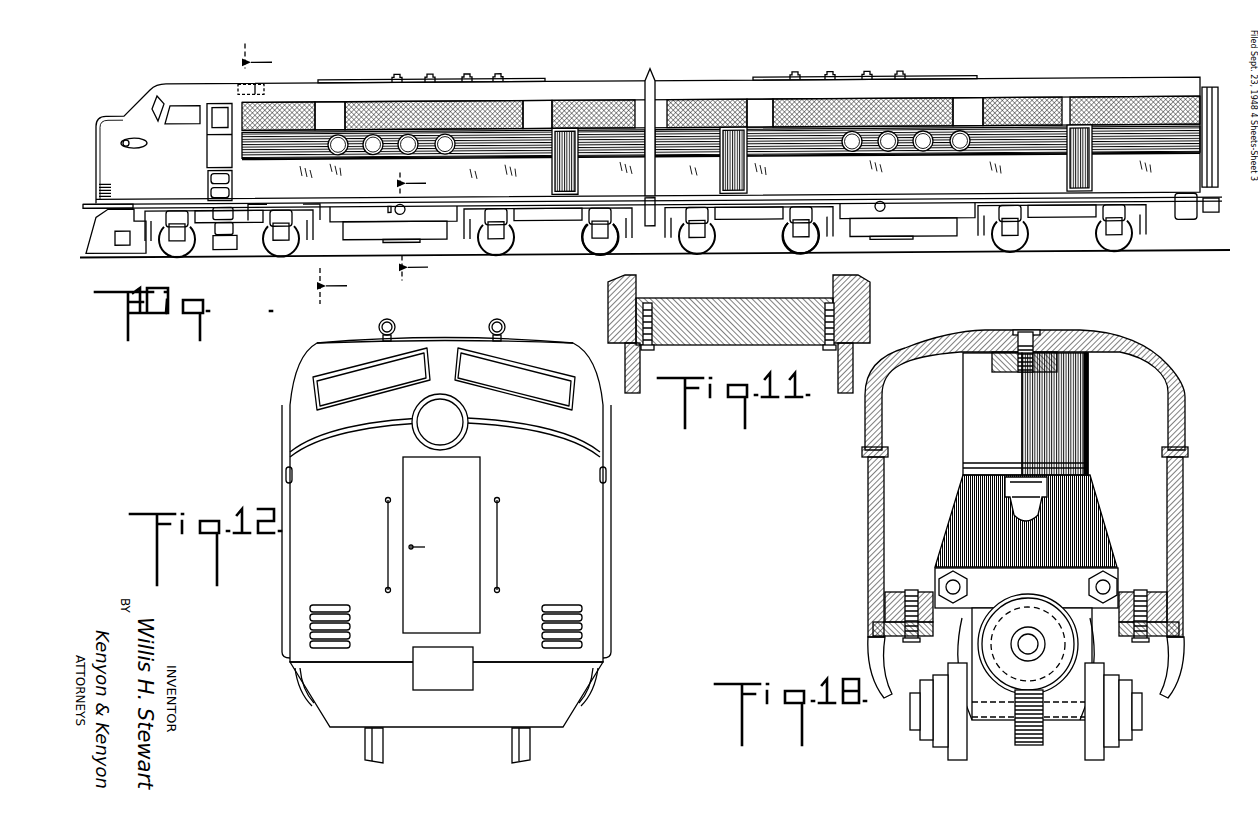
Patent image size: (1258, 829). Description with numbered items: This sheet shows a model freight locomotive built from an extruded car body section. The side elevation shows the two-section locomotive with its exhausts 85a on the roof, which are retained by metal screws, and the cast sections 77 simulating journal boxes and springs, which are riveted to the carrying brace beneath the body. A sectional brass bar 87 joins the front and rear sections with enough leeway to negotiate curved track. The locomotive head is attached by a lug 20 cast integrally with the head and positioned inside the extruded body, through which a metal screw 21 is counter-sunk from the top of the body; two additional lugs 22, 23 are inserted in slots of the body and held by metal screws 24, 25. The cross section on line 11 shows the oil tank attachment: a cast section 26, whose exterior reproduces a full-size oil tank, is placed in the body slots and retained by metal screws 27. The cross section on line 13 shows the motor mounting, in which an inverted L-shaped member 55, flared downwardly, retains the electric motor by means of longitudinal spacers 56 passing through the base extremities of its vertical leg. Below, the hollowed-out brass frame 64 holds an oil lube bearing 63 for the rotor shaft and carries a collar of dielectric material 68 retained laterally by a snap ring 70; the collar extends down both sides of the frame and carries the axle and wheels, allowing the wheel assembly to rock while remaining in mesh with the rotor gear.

In FIG. 10, the section line 11— 11 is at (426, 226).
In FIG. 10, the section line 13— 13 is at (301, 176).
In FIG. 10, the lug 20 is at (262, 92).
In FIG. 13, the lug 20 is at (1052, 352).
In FIG. 10, the metal screw 21 is at (244, 88).
In FIG. 13, the metal screw 21 is at (1020, 346).
In FIG. 10, the lug 22 is at (241, 196).
In FIG. 13, the lug 22 is at (893, 600).
In FIG. 13, the lug 23 is at (1172, 600).
In FIG. 13, the metal screw 24 is at (880, 628).
In FIG. 13, the metal screw 25 is at (1180, 627).
In FIG. 11, the cast section 26 is at (750, 312).
In FIG. 11, the metal screws 27 is at (830, 335).
In FIG. 13, the inverted L-shaped member 55 is at (1097, 520).
In FIG. 13, the longitudinal spacers 56 is at (1109, 582).
In FIG. 13, the oil lube bearing 63 is at (1040, 654).
In FIG. 13, the hollowed-out brass frame 64 is at (1004, 620).
In FIG. 13, the collar of dielectric material 68 is at (975, 575).
In FIG. 13, the snap ring 70 is at (1050, 606).
In FIG. 10, the cast sections 77 is at (626, 242).
In FIG. 10, the exhausts 85a is at (398, 76).
In FIG. 10, the sectional brass bar 87 is at (655, 232).